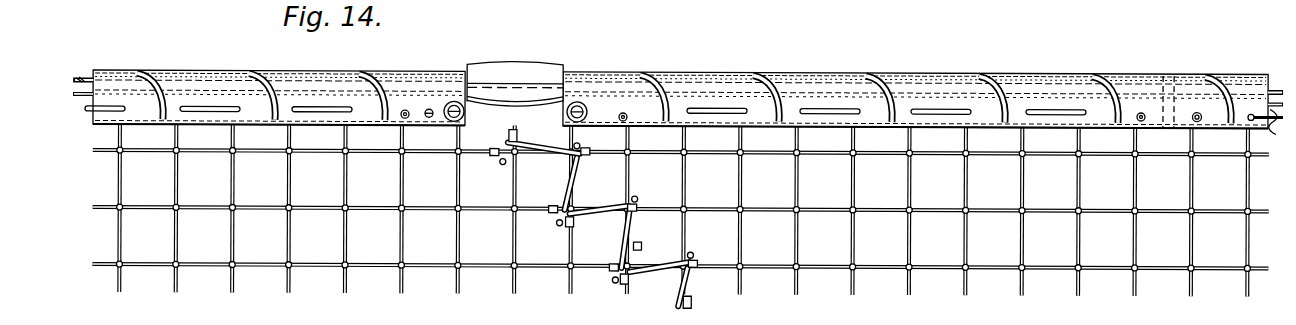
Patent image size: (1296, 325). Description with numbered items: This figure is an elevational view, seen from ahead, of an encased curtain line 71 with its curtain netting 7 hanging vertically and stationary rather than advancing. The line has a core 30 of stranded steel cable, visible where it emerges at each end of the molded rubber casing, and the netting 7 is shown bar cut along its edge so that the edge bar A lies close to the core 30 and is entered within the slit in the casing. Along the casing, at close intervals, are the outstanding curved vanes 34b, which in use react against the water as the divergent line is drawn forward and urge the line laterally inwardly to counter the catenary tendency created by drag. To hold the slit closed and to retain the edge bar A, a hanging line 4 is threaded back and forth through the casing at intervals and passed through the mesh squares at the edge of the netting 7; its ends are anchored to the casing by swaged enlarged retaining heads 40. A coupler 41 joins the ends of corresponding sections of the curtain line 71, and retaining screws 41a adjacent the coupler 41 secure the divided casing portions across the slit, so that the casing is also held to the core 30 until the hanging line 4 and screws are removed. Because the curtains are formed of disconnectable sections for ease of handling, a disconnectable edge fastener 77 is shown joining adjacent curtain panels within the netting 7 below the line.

The wire mesh 7 is at (948, 266).
The curtain line 71 is at (184, 66).
The vane 34b is at (878, 85).
The hanging line 4 is at (319, 104).
The retaining head 40 is at (407, 118).
The retaining screw 41a is at (454, 100).
The coupler 41 is at (513, 64).
The core 30 is at (80, 79).
The edge bar A is at (86, 100).
The edge fastener 77 is at (633, 246).